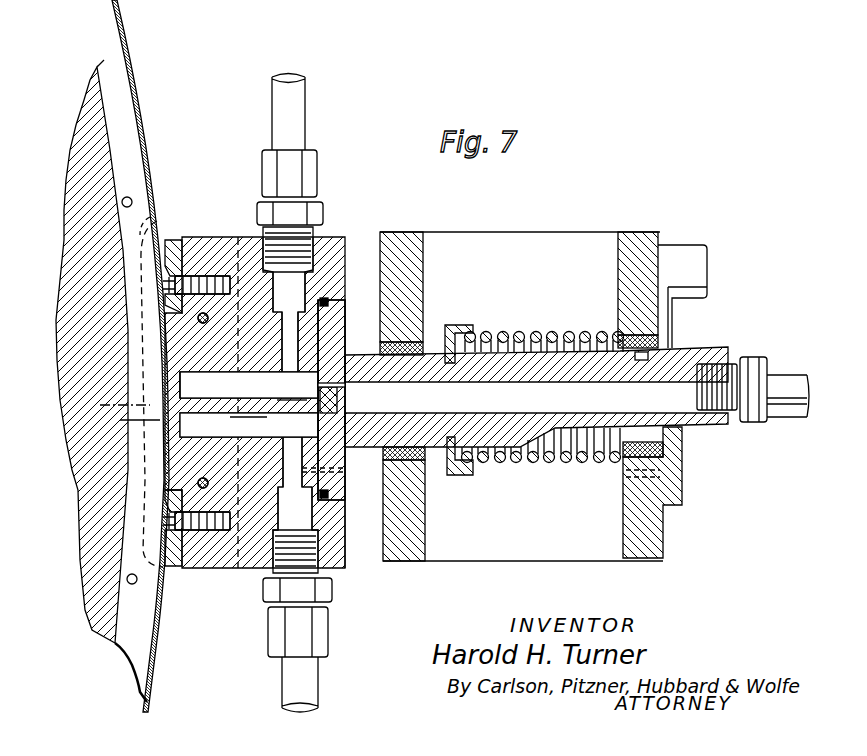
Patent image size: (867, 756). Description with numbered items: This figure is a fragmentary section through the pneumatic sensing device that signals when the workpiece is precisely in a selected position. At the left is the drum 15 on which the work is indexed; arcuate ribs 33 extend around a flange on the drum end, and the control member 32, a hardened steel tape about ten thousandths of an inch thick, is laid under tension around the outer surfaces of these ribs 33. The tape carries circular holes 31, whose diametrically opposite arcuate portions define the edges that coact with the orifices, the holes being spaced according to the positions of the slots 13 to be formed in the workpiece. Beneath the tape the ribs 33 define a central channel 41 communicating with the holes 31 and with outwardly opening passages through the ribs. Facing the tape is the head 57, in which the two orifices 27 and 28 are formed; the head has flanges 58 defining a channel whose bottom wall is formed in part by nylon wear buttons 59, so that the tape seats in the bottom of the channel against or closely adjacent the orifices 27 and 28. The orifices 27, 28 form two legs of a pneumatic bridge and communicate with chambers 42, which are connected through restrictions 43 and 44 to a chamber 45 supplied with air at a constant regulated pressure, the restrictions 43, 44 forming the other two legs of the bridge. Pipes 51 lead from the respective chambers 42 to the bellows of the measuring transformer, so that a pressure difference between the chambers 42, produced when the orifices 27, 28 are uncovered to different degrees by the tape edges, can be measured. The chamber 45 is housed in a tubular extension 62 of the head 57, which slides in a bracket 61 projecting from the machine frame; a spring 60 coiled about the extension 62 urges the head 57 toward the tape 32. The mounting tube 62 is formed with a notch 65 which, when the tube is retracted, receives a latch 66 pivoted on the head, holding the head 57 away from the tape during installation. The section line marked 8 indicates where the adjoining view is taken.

The drum 15 is at (78, 248).
The control member 32 is at (128, 27).
The ribs 33 is at (118, 57).
The central channel 41 is at (130, 157).
The chambers 42 is at (128, 197).
The flanges 58 is at (152, 216).
The nylon wear buttons 59 is at (190, 233).
The head 57 is at (208, 236).
The holes 31 is at (249, 385).
The orifice 28 is at (186, 427).
The orifice 27 is at (176, 372).
The slots 13 is at (108, 443).
The section line 8 is at (140, 403).
The restriction 44 is at (336, 412).
The restriction 43 is at (342, 390).
The chamber 45 is at (594, 401).
The bracket 61 is at (637, 238).
The notch 65 is at (652, 356).
The latch 66 is at (668, 325).
The spring 60 is at (532, 333).
The tubular extension 62 is at (718, 352).
The pipes 51 is at (300, 112).